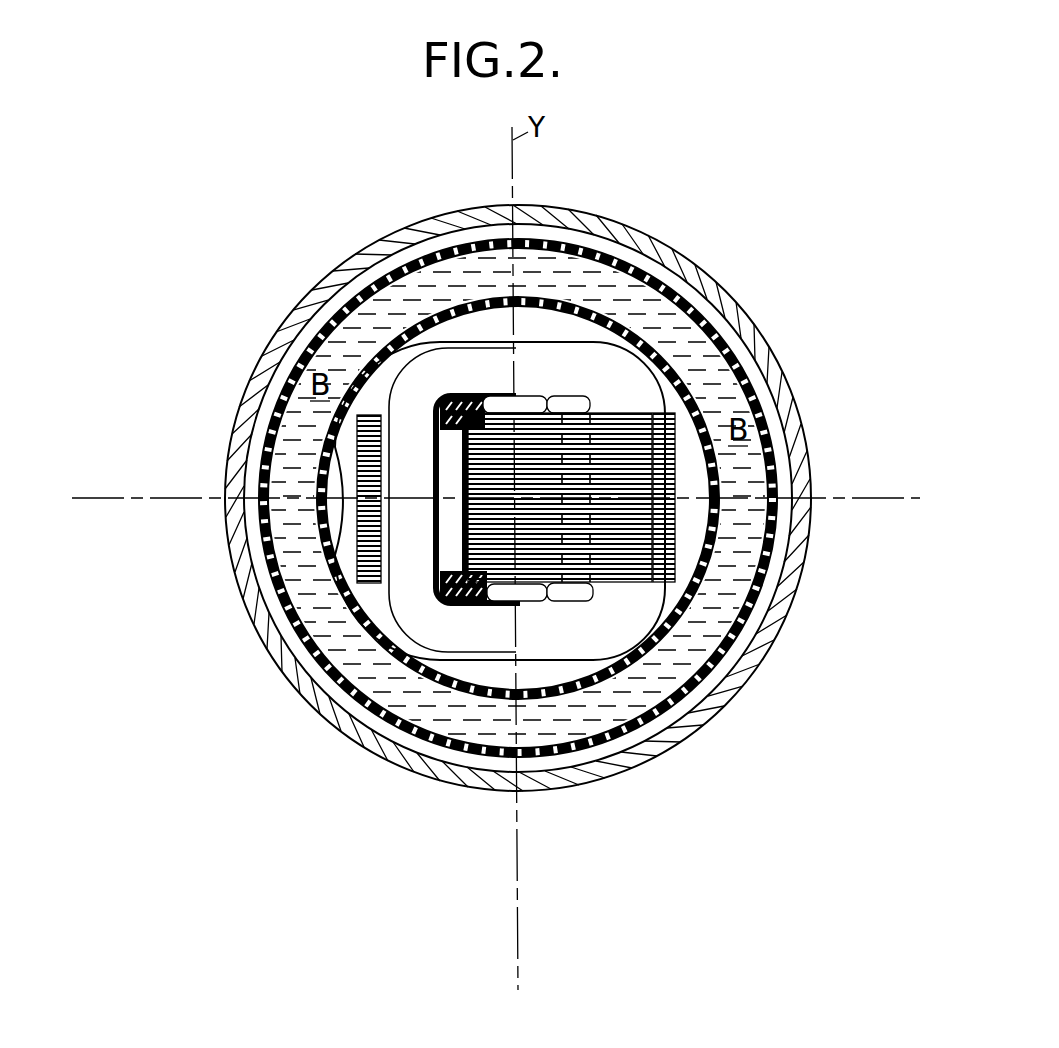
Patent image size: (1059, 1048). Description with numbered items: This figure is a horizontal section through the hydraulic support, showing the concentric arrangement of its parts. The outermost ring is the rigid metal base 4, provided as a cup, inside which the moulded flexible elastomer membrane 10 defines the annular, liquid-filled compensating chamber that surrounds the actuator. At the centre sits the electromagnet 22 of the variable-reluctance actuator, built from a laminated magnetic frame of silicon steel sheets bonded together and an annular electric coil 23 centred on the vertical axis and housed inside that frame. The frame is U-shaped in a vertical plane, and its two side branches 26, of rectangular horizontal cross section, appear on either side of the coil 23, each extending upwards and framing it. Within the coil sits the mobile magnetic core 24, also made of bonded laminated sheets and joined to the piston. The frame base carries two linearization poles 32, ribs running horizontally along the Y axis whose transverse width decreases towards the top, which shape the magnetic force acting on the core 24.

The rigid metal base 4 is at (710, 290).
The flexible elastomer membrane 10 is at (755, 390).
The electromagnet 22 is at (538, 338).
The annular electric coil 23 is at (435, 630).
The mobile magnetic core 24 is at (543, 587).
The side branches 26 is at (357, 558).
The linearization poles 32 is at (455, 545).